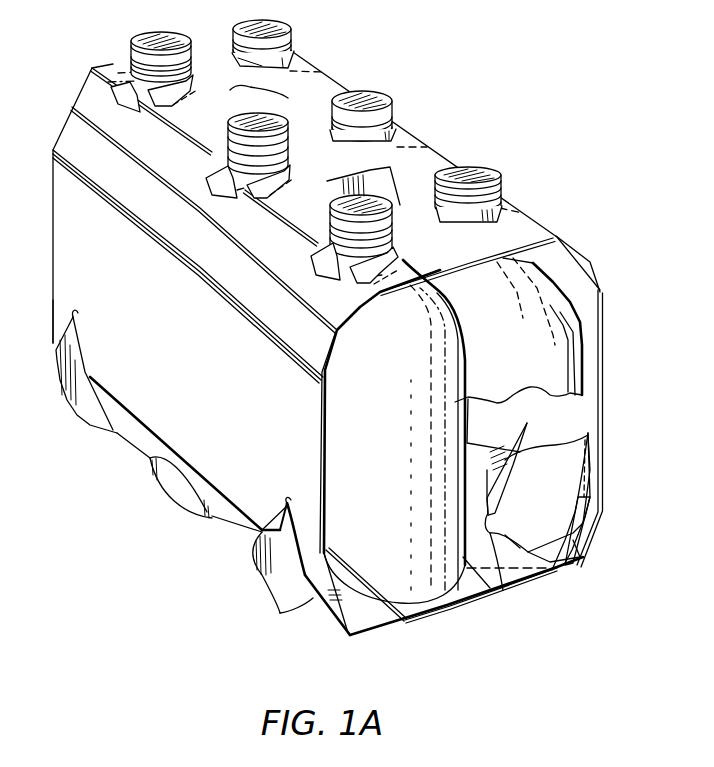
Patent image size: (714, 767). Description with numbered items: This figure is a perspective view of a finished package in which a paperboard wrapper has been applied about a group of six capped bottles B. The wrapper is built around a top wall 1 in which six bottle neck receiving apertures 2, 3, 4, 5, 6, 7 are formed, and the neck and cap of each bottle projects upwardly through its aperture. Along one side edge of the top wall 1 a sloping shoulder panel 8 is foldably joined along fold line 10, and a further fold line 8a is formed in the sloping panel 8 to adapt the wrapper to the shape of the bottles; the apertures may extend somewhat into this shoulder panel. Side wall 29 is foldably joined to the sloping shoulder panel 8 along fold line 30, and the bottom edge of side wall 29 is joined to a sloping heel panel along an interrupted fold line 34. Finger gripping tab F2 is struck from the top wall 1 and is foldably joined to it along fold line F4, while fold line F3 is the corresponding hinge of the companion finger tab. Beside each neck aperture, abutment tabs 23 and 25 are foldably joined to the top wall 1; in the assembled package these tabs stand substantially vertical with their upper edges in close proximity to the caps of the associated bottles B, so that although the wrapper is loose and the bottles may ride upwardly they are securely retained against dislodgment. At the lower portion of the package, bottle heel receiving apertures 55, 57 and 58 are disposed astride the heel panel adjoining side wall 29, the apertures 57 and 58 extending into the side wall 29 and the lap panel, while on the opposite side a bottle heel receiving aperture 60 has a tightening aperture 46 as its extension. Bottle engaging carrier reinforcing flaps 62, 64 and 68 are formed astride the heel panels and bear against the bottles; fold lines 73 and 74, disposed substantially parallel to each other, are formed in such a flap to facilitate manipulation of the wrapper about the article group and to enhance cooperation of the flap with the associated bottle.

The top wall 1 is at (431, 237).
The bottle neck receiving aperture 2 is at (194, 88).
The bottle neck receiving aperture 3 is at (285, 172).
The bottle neck receiving aperture 4 is at (401, 254).
The bottle neck receiving aperture 5 is at (240, 76).
The bottle neck receiving aperture 6 is at (333, 148).
The bottle neck receiving aperture 7 is at (477, 233).
The sloping shoulder panel 8 is at (183, 170).
The fold line 8a is at (253, 263).
The fold line 10 is at (285, 222).
The abutment tab 23 is at (236, 55).
The abutment tab 25 is at (132, 63).
The side wall 29 is at (165, 366).
The fold line 30 is at (253, 330).
The interrupted fold line 34 is at (237, 517).
The tightening aperture 46 is at (494, 583).
The bottle heel receiving aperture 55 is at (180, 460).
The bottle heel receiving aperture 57 is at (87, 377).
The bottle heel receiving aperture 58 is at (283, 592).
The bottle heel receiving aperture 60 is at (560, 445).
The bottle engaging carrier reinforcing flap 62 is at (370, 630).
The bottle engaging carrier reinforcing flap 64 is at (592, 492).
The bottle engaging carrier reinforcing flap 68 is at (515, 443).
The fold line 73 is at (571, 563).
The fold line 74 is at (590, 525).
The bottle B is at (408, 443).
The finger gripping tab F2 is at (363, 186).
The fold line F3 is at (262, 102).
The fold line F4 is at (358, 175).